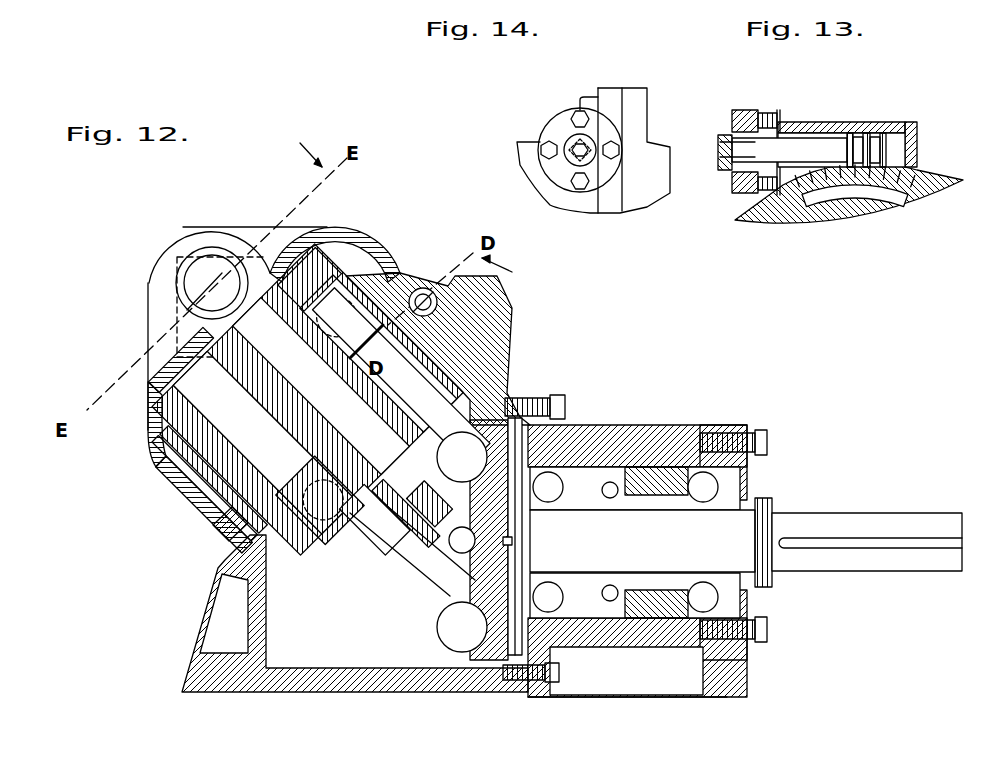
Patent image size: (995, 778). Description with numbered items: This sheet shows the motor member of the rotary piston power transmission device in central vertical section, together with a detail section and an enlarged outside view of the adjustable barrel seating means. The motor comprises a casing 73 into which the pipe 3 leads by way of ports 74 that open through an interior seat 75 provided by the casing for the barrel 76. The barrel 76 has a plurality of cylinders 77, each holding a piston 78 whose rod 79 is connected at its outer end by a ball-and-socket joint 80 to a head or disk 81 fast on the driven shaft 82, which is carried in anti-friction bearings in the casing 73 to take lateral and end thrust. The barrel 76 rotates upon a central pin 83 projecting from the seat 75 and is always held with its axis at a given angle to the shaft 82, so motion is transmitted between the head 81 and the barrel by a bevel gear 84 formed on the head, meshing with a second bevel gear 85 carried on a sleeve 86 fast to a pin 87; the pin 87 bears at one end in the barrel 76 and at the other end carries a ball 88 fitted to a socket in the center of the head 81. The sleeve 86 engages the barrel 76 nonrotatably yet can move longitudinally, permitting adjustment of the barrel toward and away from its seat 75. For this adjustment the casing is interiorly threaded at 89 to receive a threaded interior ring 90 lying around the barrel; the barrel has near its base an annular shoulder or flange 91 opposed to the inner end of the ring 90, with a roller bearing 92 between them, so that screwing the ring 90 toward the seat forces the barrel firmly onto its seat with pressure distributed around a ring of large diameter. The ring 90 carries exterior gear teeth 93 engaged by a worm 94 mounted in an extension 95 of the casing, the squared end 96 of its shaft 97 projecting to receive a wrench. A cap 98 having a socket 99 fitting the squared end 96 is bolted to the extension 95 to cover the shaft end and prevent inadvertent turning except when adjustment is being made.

In FIG. 12, the pipe 3 is at (192, 265).
In FIG. 12, the casing 73 is at (167, 447).
In FIG. 13, the casing 73 is at (933, 168).
In FIG. 14, the casing 73 is at (520, 152).
In FIG. 12, the ports 74 is at (272, 262).
In FIG. 12, the interior seat 75 is at (205, 333).
In FIG. 12, the barrel 76 is at (447, 370).
In FIG. 13, the barrel 76 is at (830, 215).
In FIG. 12, the cylinders 77 is at (523, 365).
In FIG. 13, the cylinders 77 is at (866, 210).
In FIG. 12, the piston 78 is at (320, 535).
In FIG. 12, the piston rod 79 is at (363, 560).
In FIG. 12, the ball-and-socket joint 80 is at (438, 645).
In FIG. 12, the head or disk 81 is at (497, 670).
In FIG. 12, the driven shaft 82 is at (746, 542).
In FIG. 12, the central pin 83 is at (307, 399).
In FIG. 12, the bevel gear 84 is at (470, 575).
In FIG. 12, the bevel gear 85 is at (450, 537).
In FIG. 12, the sleeve 86 is at (337, 507).
In FIG. 12, the pin 87 is at (441, 517).
In FIG. 12, the ball 88 is at (522, 524).
In FIG. 12, the interior threads 89 is at (388, 295).
In FIG. 12, the threaded interior ring 90 is at (395, 290).
In FIG. 13, the threaded interior ring 90 is at (808, 204).
In FIG. 12, the annular shoulder or flange 91 is at (345, 258).
In FIG. 12, the roller bearing 92 is at (352, 273).
In FIG. 12, the gear teeth 93 is at (180, 531).
In FIG. 13, the gear teeth 93 is at (768, 206).
In FIG. 12, the worm 94 is at (426, 290).
In FIG. 13, the worm 94 is at (850, 150).
In FIG. 13, the casing extension 95 is at (871, 146).
In FIG. 13, the squared end 96 is at (730, 150).
In FIG. 14, the squared end 96 is at (576, 153).
In FIG. 13, the worm shaft 97 is at (807, 157).
In FIG. 13, the cap 98 is at (728, 135).
In FIG. 14, the cap 98 is at (553, 130).
In FIG. 13, the socket 99 is at (730, 165).